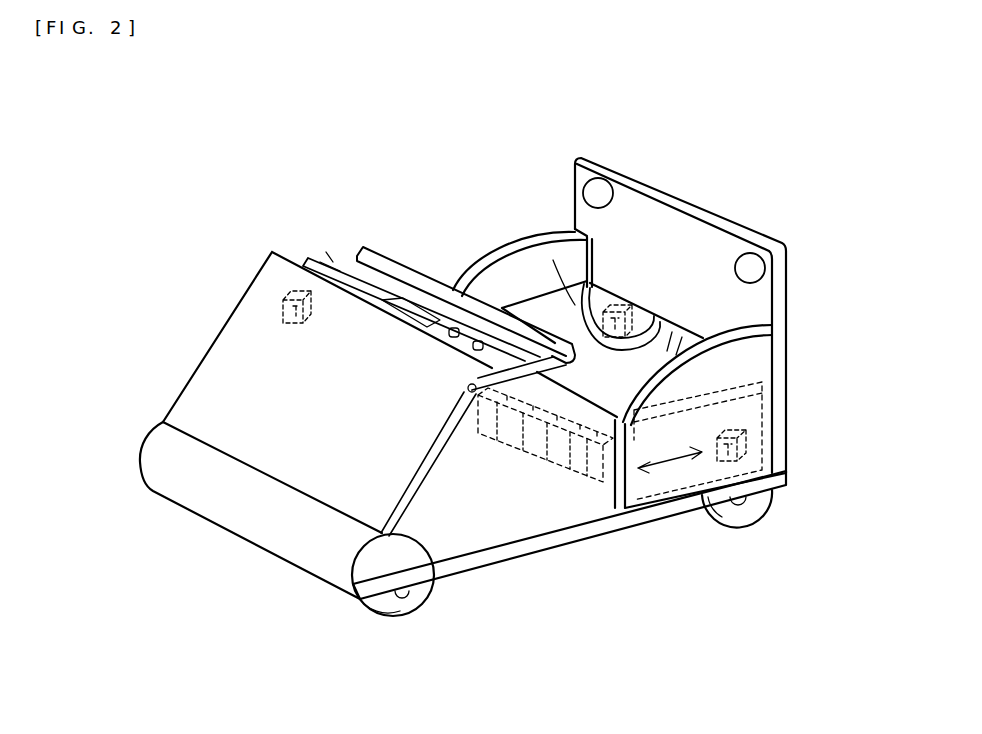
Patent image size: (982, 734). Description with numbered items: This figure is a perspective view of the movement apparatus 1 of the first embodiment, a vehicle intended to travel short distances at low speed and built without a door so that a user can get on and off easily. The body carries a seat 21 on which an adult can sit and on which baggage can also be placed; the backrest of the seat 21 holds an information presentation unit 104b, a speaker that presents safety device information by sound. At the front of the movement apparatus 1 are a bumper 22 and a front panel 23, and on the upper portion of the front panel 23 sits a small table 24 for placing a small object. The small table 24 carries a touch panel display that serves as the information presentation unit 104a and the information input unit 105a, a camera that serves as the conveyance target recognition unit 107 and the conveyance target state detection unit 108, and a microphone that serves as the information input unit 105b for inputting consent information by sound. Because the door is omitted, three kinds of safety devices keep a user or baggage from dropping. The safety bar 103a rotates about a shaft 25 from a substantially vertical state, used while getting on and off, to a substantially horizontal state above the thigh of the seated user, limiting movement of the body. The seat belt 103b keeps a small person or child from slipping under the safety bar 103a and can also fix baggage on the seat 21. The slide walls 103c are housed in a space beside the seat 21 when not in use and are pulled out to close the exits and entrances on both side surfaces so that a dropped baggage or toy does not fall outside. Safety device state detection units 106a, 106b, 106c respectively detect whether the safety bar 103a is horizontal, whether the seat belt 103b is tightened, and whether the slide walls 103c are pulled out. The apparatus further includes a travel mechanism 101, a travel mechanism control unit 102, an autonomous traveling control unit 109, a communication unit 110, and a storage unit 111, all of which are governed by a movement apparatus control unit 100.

The movement apparatus 1 is at (469, 90).
The seat 21 is at (522, 272).
The bumper 22 is at (153, 430).
The front panel 23 is at (222, 328).
The small table 24 is at (340, 257).
The shaft 25 is at (466, 391).
The movement apparatus control unit 100 is at (507, 452).
The travel mechanism 101 is at (400, 617).
The travel mechanism control unit 102 is at (487, 437).
The safety bar 103a is at (380, 247).
The seat belt 103b is at (553, 260).
The slide walls 103c is at (764, 447).
The information presentation unit 104a is at (330, 256).
The information presentation unit 104b is at (603, 178).
The information input unit 105a is at (287, 229).
The information input unit 105b is at (480, 325).
The safety device state detection unit 106a is at (290, 323).
The safety device state detection unit 106b is at (618, 307).
The safety device state detection unit 106c is at (737, 430).
The conveyance target recognition unit 107 is at (450, 328).
The conveyance target state detection unit 108 is at (454, 262).
The autonomous traveling control unit 109 is at (548, 477).
The communication unit 110 is at (530, 465).
The storage unit 111 is at (573, 487).